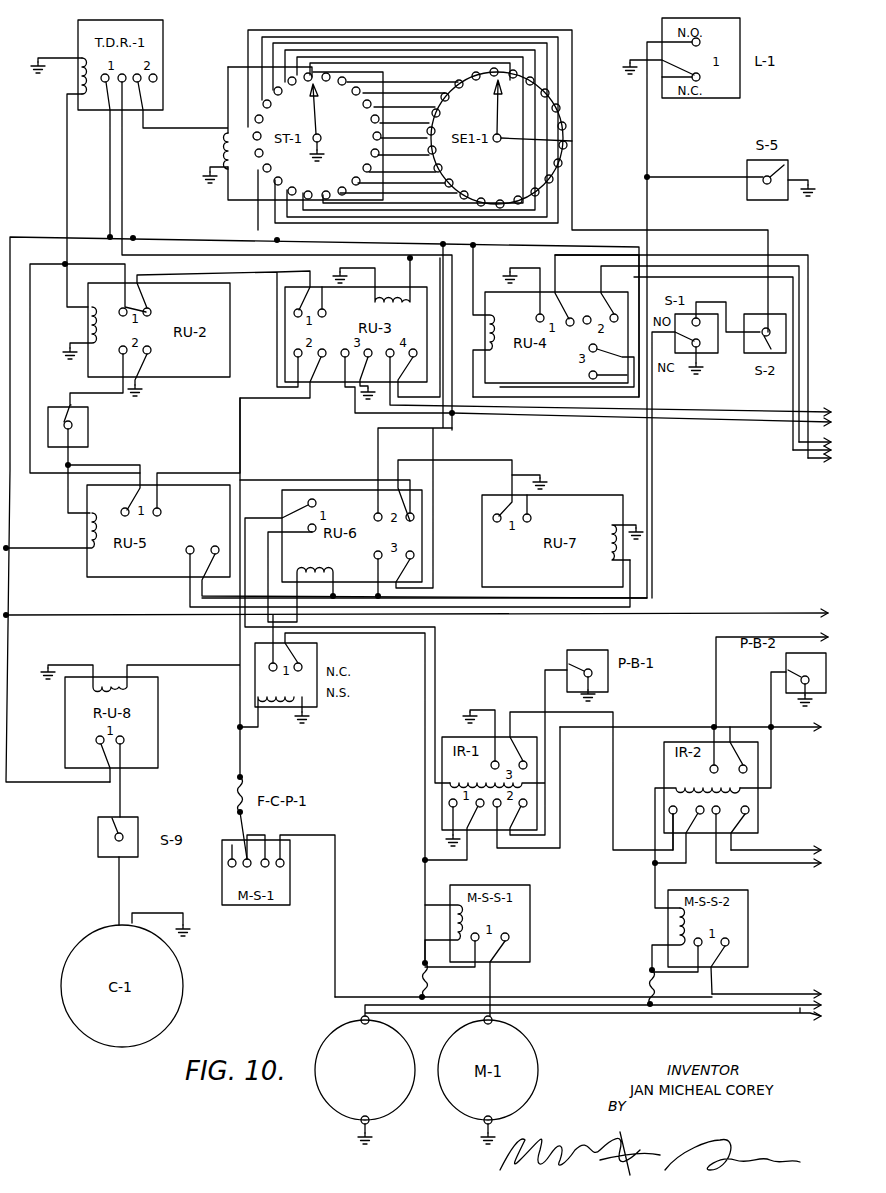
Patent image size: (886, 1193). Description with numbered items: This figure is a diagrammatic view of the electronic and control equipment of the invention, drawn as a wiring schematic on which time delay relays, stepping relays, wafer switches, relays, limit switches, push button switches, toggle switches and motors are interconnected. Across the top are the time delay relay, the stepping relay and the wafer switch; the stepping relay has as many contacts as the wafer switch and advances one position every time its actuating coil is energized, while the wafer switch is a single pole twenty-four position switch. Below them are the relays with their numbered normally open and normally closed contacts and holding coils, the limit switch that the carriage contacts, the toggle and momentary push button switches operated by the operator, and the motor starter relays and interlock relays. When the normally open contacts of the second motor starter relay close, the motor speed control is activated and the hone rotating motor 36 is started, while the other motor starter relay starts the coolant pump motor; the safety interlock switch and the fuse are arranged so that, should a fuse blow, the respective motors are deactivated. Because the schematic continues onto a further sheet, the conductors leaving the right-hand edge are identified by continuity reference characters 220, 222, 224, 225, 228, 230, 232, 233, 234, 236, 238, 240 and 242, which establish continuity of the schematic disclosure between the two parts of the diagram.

The continuity reference character 220 is at (704, 412).
The continuity reference character 222 is at (744, 422).
The continuity reference character 224 is at (799, 434).
The conductor line 225 is at (793, 452).
The continuity reference character 228 is at (816, 464).
The continuity reference character 230 is at (739, 613).
The continuity reference character 232 is at (796, 637).
The continuity reference character 233 is at (786, 731).
The continuity reference character 234 is at (776, 850).
The continuity reference character 236 is at (810, 866).
The continuity reference character 238 is at (805, 991).
The continuity reference character 240 is at (801, 1010).
The continuity reference character 242 is at (680, 1018).
The hone rotating motor 36 is at (365, 1080).